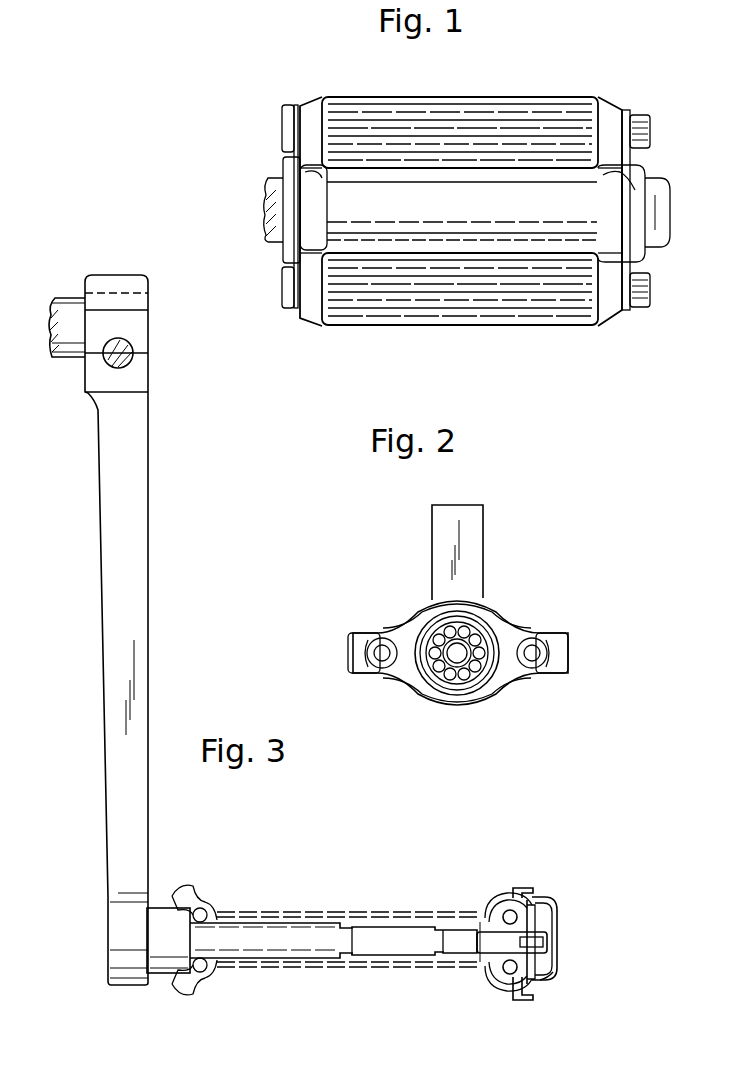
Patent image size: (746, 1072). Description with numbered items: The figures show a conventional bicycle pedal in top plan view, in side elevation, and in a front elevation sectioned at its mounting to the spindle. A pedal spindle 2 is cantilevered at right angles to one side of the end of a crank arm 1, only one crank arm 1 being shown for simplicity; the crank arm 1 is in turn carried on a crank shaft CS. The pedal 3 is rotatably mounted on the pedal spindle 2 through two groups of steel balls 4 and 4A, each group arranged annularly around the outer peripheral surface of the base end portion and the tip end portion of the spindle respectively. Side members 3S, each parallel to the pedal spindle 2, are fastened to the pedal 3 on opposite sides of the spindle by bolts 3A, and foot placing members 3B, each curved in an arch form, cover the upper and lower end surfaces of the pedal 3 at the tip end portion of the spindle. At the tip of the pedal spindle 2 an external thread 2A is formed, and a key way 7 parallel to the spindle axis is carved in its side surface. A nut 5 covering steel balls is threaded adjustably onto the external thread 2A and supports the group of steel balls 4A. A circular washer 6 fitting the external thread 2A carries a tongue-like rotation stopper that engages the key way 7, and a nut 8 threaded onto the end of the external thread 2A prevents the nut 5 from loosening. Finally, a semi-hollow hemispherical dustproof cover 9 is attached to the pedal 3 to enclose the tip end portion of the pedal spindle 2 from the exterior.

In FIG. 2, the crank arm 1 is at (485, 548).
In FIG. 3, the crank arm 1 is at (140, 652).
In FIG. 3, the pedal spindle 2 is at (285, 922).
In FIG. 3, the external thread 2A is at (478, 923).
In FIG. 1, the pedal 3 is at (490, 92).
In FIG. 3, the pedal 3 is at (327, 910).
In FIG. 1, the bolts 3A is at (651, 131).
In FIG. 2, the bolts 3A is at (380, 645).
In FIG. 1, the foot placing members 3B is at (627, 191).
In FIG. 2, the foot placing members 3B is at (422, 607).
In FIG. 3, the foot placing members 3B is at (523, 886).
In FIG. 1, the side members 3S is at (415, 100).
In FIG. 3, the steel balls 4 is at (201, 908).
In FIG. 3, the steel balls 4A is at (505, 896).
In FIG. 3, the nut covering steel balls 5 is at (536, 901).
In FIG. 3, the circular washer 6 is at (548, 915).
In FIG. 3, the key way 7 is at (538, 942).
In FIG. 3, the nut 8 is at (557, 962).
In FIG. 3, the dustproof cover 9 is at (549, 981).
In FIG. 3, the crank shaft CS is at (63, 358).